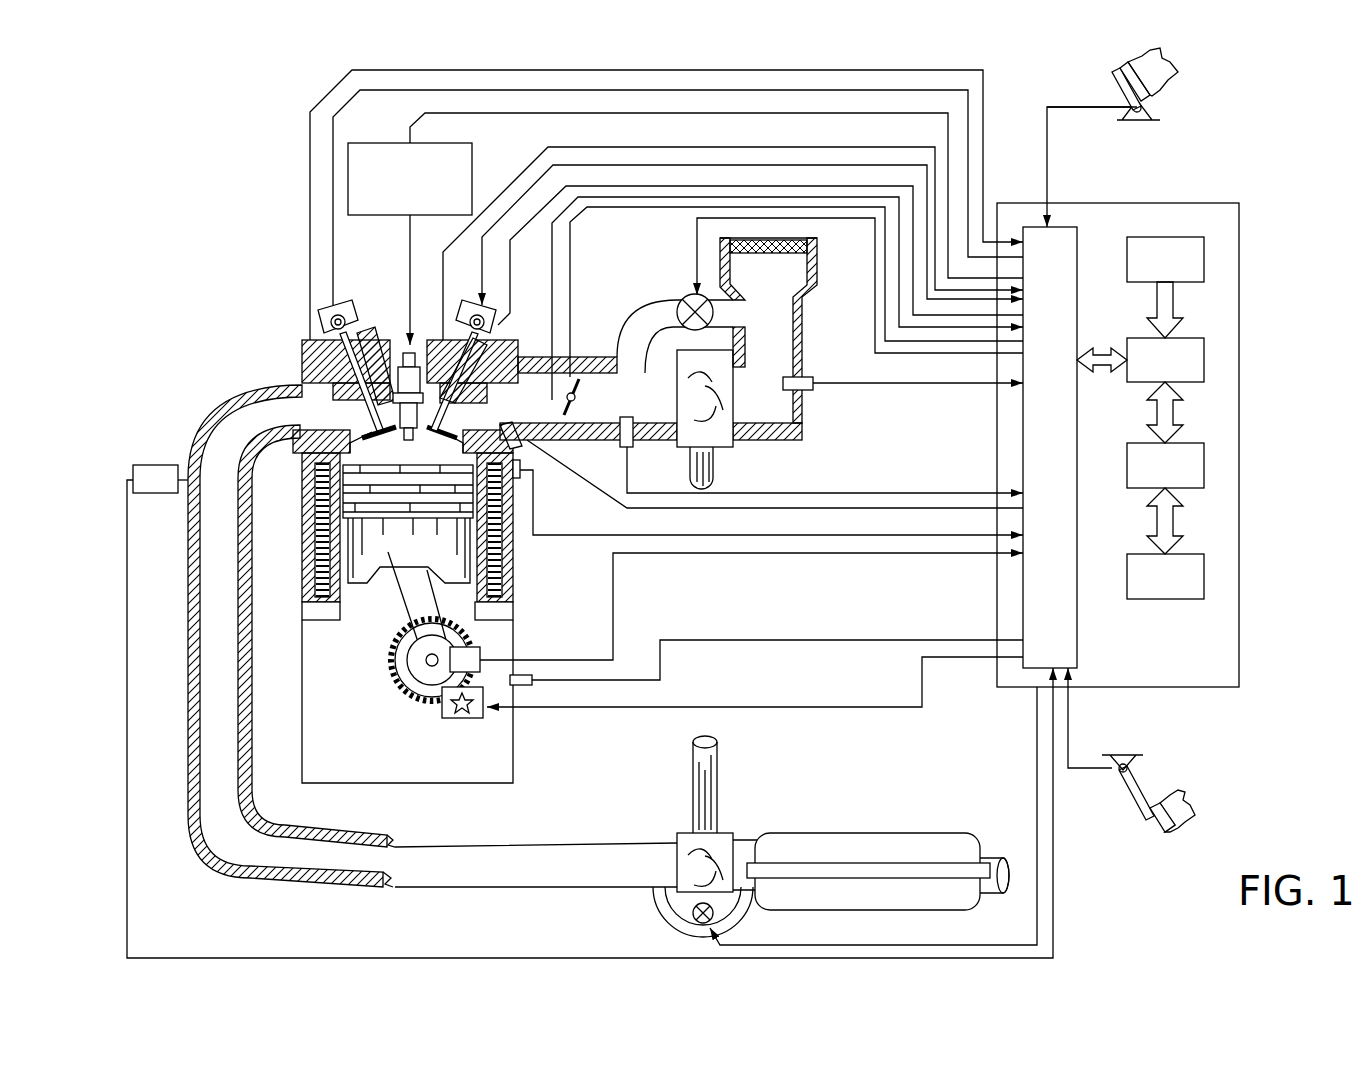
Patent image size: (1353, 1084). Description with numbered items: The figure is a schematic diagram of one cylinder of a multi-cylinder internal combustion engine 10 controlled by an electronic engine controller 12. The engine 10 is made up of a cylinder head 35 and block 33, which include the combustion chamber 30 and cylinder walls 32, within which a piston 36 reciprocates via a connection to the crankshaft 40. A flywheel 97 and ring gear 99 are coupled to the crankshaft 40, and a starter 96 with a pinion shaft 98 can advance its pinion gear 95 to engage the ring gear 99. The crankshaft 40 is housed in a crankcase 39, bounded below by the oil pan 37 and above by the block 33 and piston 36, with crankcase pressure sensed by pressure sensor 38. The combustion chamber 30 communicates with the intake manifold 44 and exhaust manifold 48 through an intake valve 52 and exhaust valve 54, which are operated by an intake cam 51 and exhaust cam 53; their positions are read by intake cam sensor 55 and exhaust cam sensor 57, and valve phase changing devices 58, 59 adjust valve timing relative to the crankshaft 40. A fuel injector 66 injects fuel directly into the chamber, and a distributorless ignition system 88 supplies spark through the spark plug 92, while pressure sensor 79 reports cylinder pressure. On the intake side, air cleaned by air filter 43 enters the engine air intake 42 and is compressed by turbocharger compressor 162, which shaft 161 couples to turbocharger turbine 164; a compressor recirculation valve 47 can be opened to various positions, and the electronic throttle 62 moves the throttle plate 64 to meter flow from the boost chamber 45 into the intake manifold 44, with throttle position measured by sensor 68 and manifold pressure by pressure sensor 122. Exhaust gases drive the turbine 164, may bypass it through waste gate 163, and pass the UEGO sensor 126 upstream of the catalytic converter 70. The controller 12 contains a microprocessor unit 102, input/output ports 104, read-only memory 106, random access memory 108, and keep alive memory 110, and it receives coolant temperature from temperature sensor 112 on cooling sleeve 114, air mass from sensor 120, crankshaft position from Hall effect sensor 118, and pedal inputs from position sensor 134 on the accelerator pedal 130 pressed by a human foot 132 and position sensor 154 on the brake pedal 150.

The internal combustion engine 10 is at (238, 290).
The electronic engine controller 12 is at (1225, 203).
The combustion chamber 30 is at (405, 447).
The cylinder walls 32 is at (345, 600).
The block 33 is at (300, 478).
The cylinder head 35 is at (298, 340).
The piston 36 is at (395, 575).
The oil pan 37 is at (513, 772).
The pressure sensor 38 is at (528, 680).
The crankcase 39 is at (322, 705).
The crankshaft 40 is at (402, 690).
The engine air intake 42 is at (633, 260).
The air filter 43 is at (787, 255).
The intake manifold 44 is at (549, 409).
The boost chamber 45 is at (650, 411).
The compressor recirculation valve 47 is at (688, 297).
The exhaust manifold 48 is at (283, 417).
The intake cam 51 is at (472, 310).
The intake valve 52 is at (450, 432).
The exhaust cam 53 is at (352, 305).
The exhaust valve 54 is at (328, 395).
The intake cam sensor 55 is at (497, 327).
The exhaust cam sensor 57 is at (333, 315).
The valve phase changing device 58 is at (362, 335).
The valve phase changing device 59 is at (494, 316).
The electronic throttle 62 is at (576, 410).
The throttle plate 64 is at (621, 430).
The fuel injector 66 is at (530, 447).
The throttle position sensor 68 is at (516, 372).
The catalytic converter 70 is at (797, 832).
The pressure sensor 79 is at (418, 375).
The distributorless ignition system 88 is at (365, 143).
The spark plug 92 is at (404, 352).
The pinion gear 95 is at (470, 722).
The starter 96 is at (480, 718).
The flywheel 97 is at (397, 668).
The pinion shaft 98 is at (460, 722).
The ring gear 99 is at (426, 708).
The microprocessor unit 102 is at (1207, 352).
The input/output ports 104 is at (1080, 233).
The read-only memory 106 is at (1207, 253).
The random access memory 108 is at (1207, 462).
The keep alive memory 110 is at (1207, 572).
The temperature sensor 112 is at (522, 478).
The cooling sleeve 114 is at (513, 557).
The Hall effect sensor 118 is at (482, 650).
The air mass sensor 120 is at (805, 378).
The pressure sensor 122 is at (622, 447).
The Universal Exhaust Gas Oxygen sensor 126 is at (135, 470).
The accelerator pedal 130 is at (1113, 80).
The human foot 132 is at (1167, 68).
The position sensor 134 is at (1160, 108).
The brake pedal 150 is at (1148, 823).
The position sensor 154 is at (1112, 767).
The shaft 161 is at (690, 466).
The turbocharger compressor 162 is at (720, 442).
The waste gate 163 is at (692, 920).
The turbocharger turbine 164 is at (678, 832).